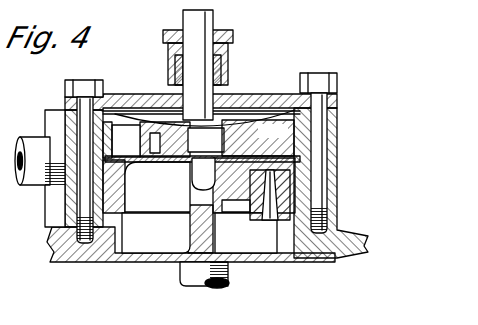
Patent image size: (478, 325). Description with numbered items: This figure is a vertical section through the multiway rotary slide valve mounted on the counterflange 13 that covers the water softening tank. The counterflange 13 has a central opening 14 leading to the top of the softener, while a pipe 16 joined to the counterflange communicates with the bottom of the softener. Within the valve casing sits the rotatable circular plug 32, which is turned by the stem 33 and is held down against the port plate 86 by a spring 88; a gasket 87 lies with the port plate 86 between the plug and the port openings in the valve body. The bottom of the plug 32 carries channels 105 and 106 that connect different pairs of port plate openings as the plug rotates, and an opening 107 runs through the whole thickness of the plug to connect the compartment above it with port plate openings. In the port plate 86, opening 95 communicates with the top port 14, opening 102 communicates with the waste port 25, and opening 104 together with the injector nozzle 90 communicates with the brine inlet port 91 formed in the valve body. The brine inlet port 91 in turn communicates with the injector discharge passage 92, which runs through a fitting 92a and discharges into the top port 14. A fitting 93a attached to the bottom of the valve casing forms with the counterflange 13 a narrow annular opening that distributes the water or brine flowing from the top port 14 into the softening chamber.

The counterflange 13 is at (328, 256).
The central opening 14 is at (175, 186).
The pipe 16 is at (230, 272).
The waste port 25 is at (196, 178).
The rotatable circular plug 32 is at (300, 140).
The stem 33 is at (214, 26).
The port plate 86 is at (296, 160).
The gasket 87 is at (300, 168).
The spring 88 is at (250, 96).
The injector nozzle 90 is at (258, 138).
The brine inlet port 91 is at (305, 185).
The injector discharge passage 92 is at (270, 226).
The fitting 92a is at (268, 221).
The fitting 93a is at (180, 266).
The port plate opening 95 is at (122, 151).
The port plate opening 102 is at (205, 184).
The port plate opening 104 is at (292, 151).
The channel 105 is at (158, 130).
The channel 106 is at (206, 140).
The plug opening 107 is at (124, 124).